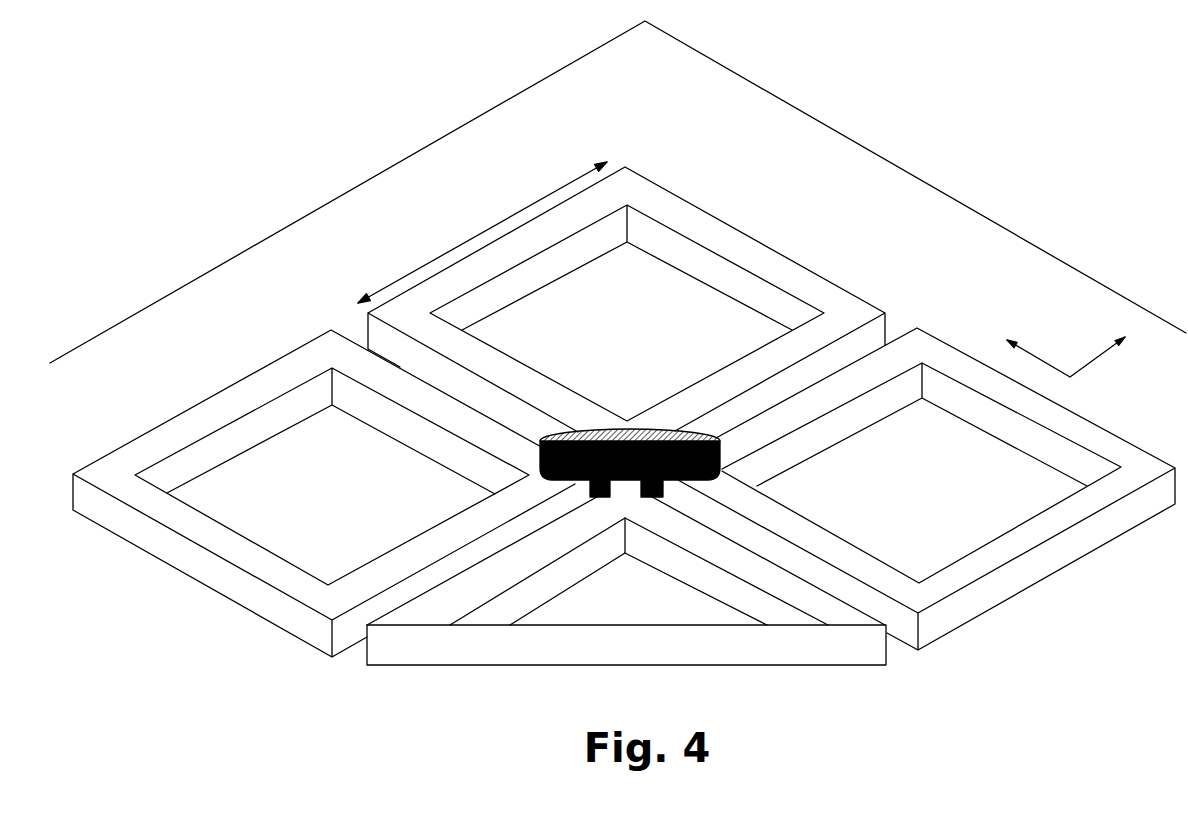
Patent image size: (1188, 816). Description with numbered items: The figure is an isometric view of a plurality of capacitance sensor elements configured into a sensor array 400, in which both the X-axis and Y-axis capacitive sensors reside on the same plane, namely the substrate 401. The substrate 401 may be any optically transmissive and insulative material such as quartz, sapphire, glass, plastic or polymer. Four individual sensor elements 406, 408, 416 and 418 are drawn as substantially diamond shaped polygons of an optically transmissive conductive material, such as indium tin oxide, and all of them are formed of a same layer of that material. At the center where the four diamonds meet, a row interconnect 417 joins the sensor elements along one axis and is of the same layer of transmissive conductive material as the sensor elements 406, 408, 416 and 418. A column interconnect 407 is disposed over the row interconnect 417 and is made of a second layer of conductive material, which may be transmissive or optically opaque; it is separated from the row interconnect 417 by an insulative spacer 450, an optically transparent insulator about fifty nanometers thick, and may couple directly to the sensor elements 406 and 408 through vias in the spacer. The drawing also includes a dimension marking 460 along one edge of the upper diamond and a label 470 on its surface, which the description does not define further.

The sensor array 400 is at (312, 128).
The substrate 401 is at (113, 270).
The sensor element 406 is at (926, 489).
The column interconnect 407 is at (568, 427).
The sensor element 408 is at (324, 493).
The sensor element 416 is at (626, 571).
The row interconnect 417 is at (626, 478).
The sensor element 418 is at (626, 299).
The insulative spacer 450 is at (541, 461).
The length dimension 460 is at (482, 232).
The frame opening 470 is at (599, 334).